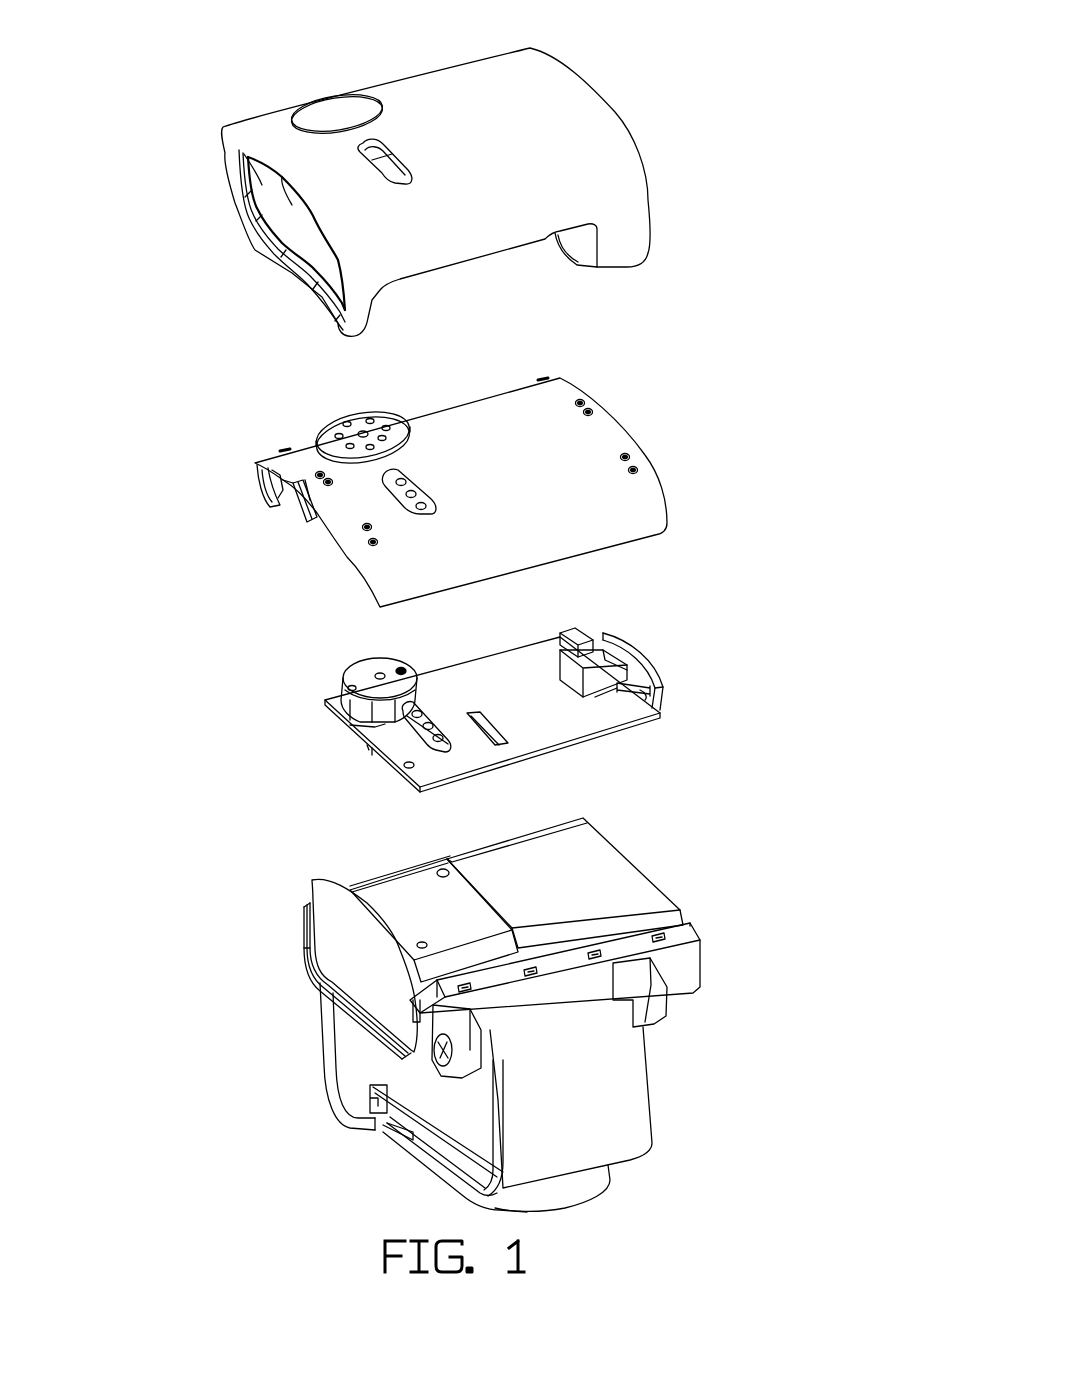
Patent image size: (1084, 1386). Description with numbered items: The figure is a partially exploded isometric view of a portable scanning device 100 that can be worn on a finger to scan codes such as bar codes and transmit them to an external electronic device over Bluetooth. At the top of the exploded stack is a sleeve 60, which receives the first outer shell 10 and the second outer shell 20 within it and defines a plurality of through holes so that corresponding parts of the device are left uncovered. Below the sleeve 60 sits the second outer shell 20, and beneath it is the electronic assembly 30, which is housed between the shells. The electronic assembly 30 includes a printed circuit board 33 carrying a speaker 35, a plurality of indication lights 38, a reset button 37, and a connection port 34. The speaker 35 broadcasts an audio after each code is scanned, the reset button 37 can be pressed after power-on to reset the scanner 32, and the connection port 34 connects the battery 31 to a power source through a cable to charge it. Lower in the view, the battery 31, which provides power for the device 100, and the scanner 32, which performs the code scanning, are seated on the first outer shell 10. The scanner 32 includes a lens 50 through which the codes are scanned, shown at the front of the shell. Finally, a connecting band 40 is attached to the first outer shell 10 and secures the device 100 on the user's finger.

The portable scanning device 100 is at (387, 55).
The sleeve 60 is at (620, 140).
The second outer shell 20 is at (643, 426).
The electronic assembly 30 is at (533, 696).
The printed circuit board 33 is at (497, 660).
The speaker 35 is at (358, 675).
The indication lights 38 is at (437, 745).
The reset button 37 is at (572, 632).
The connection port 34 is at (594, 667).
The battery 31 is at (605, 858).
The scanner 32 is at (397, 888).
The first outer shell 10 is at (714, 951).
The connecting band 40 is at (663, 1138).
The lens 50 is at (337, 938).